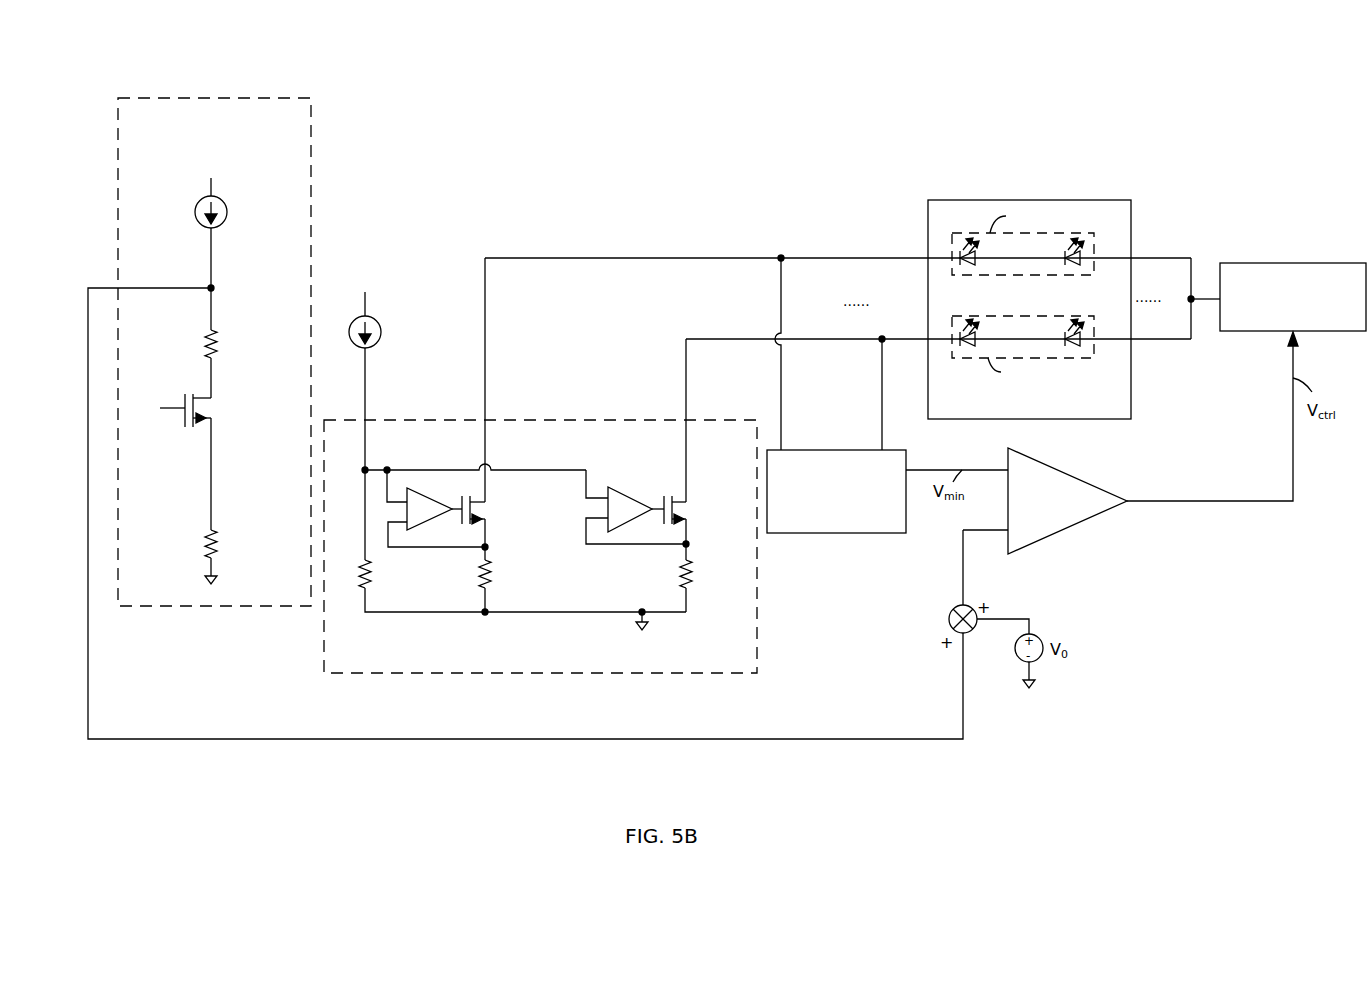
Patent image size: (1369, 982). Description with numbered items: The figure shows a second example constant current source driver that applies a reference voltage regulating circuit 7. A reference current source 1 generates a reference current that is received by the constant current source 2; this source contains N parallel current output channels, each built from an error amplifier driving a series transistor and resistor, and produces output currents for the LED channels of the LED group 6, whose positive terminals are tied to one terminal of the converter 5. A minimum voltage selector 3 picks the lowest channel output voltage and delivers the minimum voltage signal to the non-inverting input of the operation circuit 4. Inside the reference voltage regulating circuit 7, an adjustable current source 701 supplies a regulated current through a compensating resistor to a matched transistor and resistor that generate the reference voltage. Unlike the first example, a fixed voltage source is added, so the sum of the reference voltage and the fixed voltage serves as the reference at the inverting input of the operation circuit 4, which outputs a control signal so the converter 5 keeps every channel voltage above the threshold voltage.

The reference voltage regulating circuit 7 is at (118, 232).
The adjustable current source 701 is at (197, 206).
The reference current source 1 is at (352, 322).
The constant current source 2 is at (540, 465).
The minimum voltage selector 3 is at (836, 491).
The operation circuit 4 is at (1067, 501).
The converter 5 is at (1293, 297).
The LED group 6 is at (1029, 309).